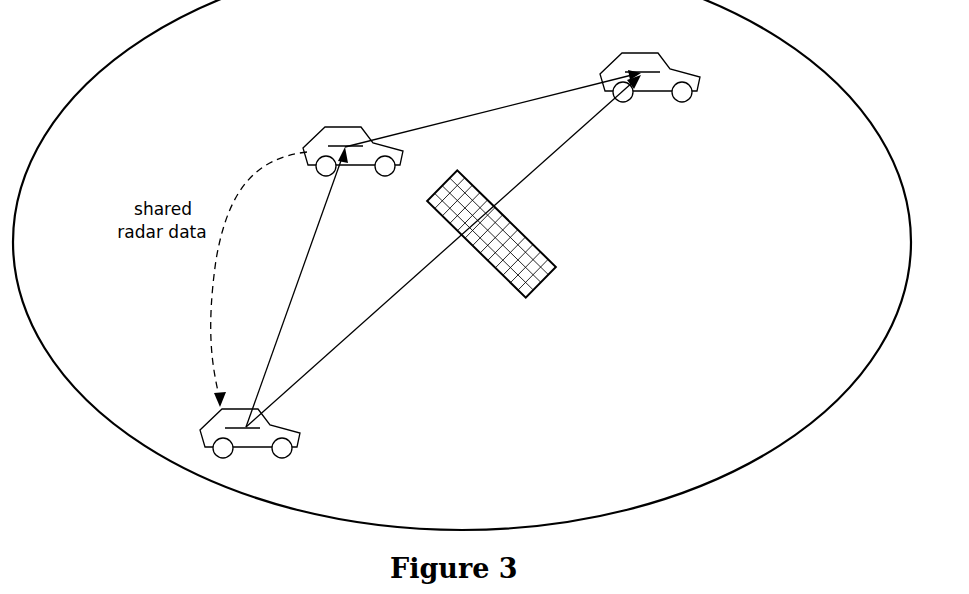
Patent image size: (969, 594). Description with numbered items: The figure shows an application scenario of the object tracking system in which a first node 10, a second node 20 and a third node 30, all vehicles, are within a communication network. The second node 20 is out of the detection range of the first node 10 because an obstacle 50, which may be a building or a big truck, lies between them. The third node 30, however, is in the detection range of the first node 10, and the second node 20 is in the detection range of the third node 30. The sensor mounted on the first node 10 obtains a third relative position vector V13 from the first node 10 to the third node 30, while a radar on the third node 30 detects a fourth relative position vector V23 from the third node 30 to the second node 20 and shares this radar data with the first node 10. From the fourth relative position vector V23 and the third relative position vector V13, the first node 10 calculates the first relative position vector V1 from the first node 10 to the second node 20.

The first node 10 is at (283, 428).
The second node 20 is at (678, 72).
The third node 30 is at (355, 125).
The obstacle 50 is at (530, 240).
The first relative position vector V1 is at (443, 251).
The third relative position vector V13 is at (297, 287).
The fourth relative position vector V23 is at (493, 108).